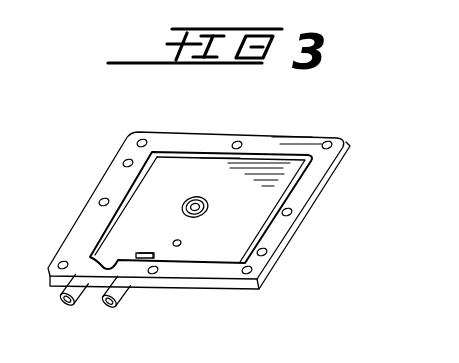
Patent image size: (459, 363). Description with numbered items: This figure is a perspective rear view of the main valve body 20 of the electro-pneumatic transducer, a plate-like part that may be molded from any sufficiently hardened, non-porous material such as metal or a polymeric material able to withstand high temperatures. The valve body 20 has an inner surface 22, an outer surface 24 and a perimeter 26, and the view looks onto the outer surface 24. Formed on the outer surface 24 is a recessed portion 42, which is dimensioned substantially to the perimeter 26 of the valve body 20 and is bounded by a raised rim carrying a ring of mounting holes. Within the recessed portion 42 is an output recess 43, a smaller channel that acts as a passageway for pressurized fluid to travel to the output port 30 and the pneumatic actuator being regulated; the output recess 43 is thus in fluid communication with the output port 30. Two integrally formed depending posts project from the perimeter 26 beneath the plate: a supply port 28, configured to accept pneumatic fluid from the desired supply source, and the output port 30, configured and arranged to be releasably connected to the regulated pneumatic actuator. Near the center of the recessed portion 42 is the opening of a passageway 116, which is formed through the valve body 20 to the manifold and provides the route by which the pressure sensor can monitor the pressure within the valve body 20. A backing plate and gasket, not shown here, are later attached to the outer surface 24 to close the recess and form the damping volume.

The main valve body 20 is at (206, 219).
The inner surface 22 is at (221, 291).
The outer surface 24 is at (311, 185).
The perimeter 26 is at (267, 280).
The supply port 28 is at (75, 298).
The output port 30 is at (122, 299).
The recessed portion 42 is at (292, 170).
The output recess 43 is at (147, 251).
The passageway 116 is at (188, 197).